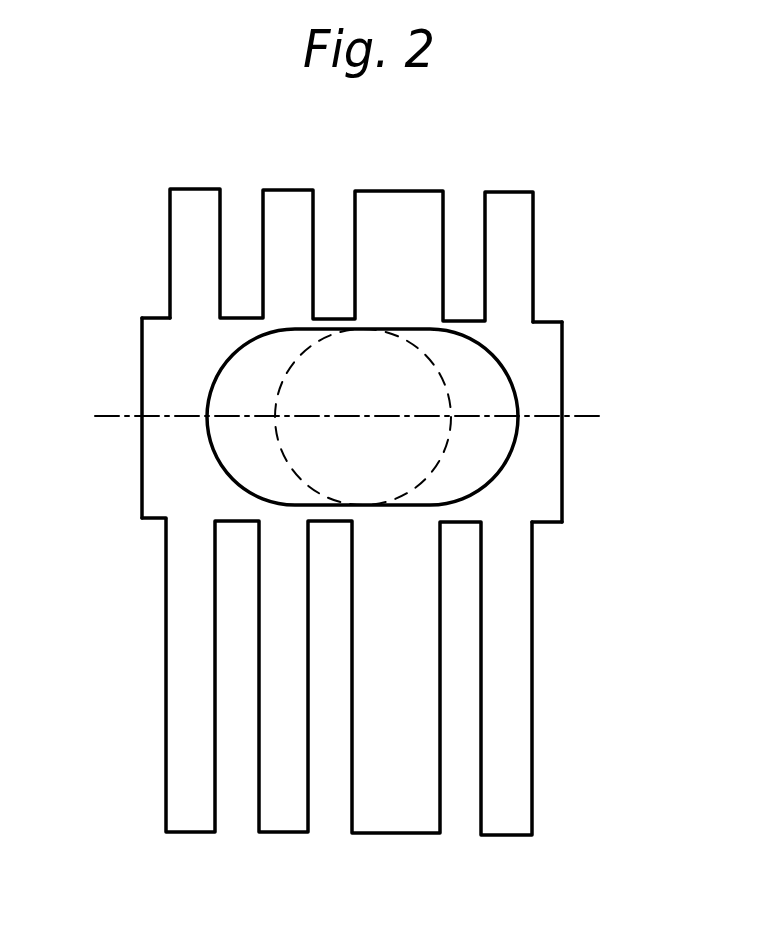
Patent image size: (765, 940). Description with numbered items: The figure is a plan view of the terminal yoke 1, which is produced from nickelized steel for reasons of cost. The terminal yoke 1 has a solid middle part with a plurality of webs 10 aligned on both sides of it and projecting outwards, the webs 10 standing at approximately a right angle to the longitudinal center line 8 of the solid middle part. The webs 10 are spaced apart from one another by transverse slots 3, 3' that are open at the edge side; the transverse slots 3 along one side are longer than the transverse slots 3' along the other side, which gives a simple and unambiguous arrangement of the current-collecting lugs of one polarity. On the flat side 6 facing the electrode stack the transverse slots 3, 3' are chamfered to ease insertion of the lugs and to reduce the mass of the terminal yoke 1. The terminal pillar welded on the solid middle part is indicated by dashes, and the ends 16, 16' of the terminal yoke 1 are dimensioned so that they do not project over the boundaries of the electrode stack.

The terminal yoke 1 is at (135, 461).
The transverse slots 3 is at (349, 717).
The transverse slots 3' is at (351, 220).
The flat side 6 is at (546, 352).
The longitudinal center line 8 is at (545, 417).
The webs 10 is at (293, 252).
The end of the terminal yoke 16 is at (97, 410).
The end of the terminal yoke 16' is at (617, 422).